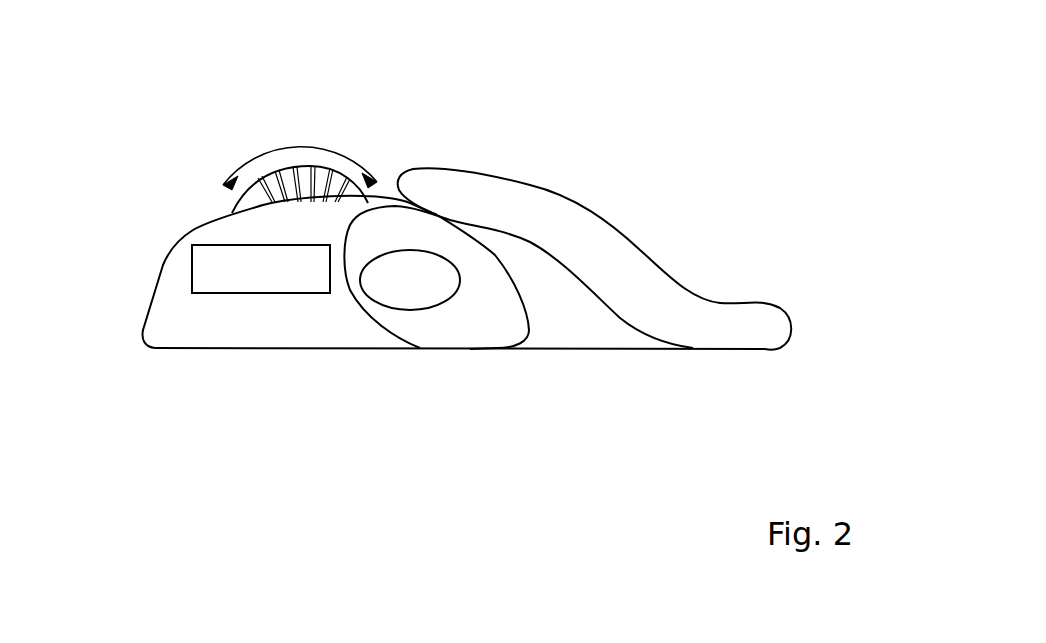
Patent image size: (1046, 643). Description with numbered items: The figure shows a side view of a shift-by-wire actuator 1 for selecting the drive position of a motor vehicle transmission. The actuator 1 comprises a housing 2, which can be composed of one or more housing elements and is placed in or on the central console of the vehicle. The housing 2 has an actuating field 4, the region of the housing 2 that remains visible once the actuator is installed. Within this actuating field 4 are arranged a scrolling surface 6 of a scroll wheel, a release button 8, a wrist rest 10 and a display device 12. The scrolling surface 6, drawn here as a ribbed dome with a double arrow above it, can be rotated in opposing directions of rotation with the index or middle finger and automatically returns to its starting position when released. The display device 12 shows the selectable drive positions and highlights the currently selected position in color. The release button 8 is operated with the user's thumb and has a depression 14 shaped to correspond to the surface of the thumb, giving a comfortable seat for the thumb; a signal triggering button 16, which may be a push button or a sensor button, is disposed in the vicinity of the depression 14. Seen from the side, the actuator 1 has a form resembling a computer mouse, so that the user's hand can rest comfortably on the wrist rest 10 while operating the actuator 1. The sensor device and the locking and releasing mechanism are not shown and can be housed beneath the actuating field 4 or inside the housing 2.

The shift-by-wire actuator 1 is at (103, 128).
The housing 2 is at (147, 303).
The actuating field 4 is at (195, 320).
The scrolling surface 6 is at (313, 167).
The release button 8 is at (428, 320).
The wrist rest 10 is at (570, 230).
The display device 12 is at (247, 284).
The depression 14 is at (485, 322).
The signal triggering button 16 is at (398, 296).